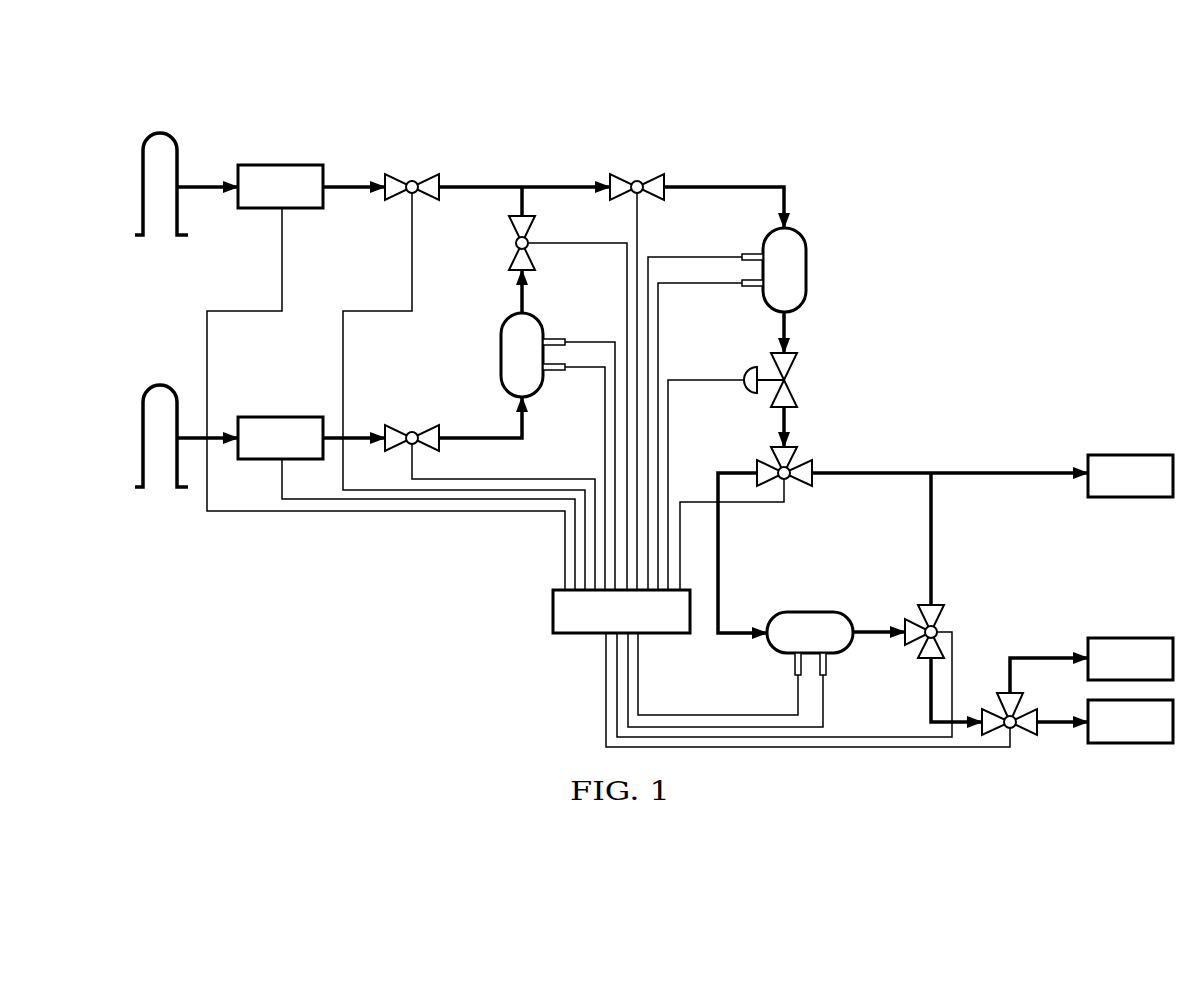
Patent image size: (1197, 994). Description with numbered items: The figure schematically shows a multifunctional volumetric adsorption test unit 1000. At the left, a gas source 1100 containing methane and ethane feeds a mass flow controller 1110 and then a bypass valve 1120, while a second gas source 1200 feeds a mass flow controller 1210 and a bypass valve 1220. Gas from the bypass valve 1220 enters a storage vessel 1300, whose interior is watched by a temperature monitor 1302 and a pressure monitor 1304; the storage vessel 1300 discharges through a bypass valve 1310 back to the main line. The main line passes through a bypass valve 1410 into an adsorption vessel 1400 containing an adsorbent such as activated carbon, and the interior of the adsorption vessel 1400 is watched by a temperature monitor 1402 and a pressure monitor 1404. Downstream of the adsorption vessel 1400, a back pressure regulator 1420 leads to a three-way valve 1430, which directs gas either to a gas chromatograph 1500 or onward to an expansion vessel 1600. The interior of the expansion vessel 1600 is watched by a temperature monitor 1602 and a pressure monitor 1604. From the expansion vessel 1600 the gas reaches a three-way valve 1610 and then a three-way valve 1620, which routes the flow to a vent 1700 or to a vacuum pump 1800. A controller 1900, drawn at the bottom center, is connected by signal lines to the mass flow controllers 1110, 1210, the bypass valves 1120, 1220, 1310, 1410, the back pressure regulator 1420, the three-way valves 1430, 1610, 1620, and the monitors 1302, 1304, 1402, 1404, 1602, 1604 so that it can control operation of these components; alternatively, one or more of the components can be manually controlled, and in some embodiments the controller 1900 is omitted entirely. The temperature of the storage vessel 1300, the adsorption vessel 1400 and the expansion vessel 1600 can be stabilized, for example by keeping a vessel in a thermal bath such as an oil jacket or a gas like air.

The multifunctional volumetric adsorption test unit 1000 is at (1052, 95).
The gas source 1100 is at (142, 177).
The mass flow controller 1110 is at (270, 165).
The bypass valve 1120 is at (398, 174).
The gas source 1200 is at (142, 448).
The mass flow controller 1210 is at (270, 417).
The bypass valve 1220 is at (398, 425).
The storage vessel 1300 is at (501, 350).
The temperature monitor 1302 is at (553, 372).
The pressure monitor 1304 is at (553, 338).
The bypass valve 1310 is at (507, 228).
The adsorption vessel 1400 is at (808, 270).
The temperature monitor 1402 is at (752, 254).
The pressure monitor 1404 is at (752, 288).
The bypass valve 1410 is at (623, 174).
The back pressure regulator 1420 is at (797, 390).
The three-way valve 1430 is at (790, 487).
The gas chromatograph 1500 is at (1130, 455).
The expansion vessel 1600 is at (812, 612).
The temperature monitor 1602 is at (792, 668).
The pressure monitor 1604 is at (829, 668).
The three-way valve 1610 is at (944, 618).
The three-way valve 1620 is at (1023, 738).
The vent 1700 is at (1130, 638).
The vacuum pump 1800 is at (1130, 743).
The controller 1900 is at (553, 618).